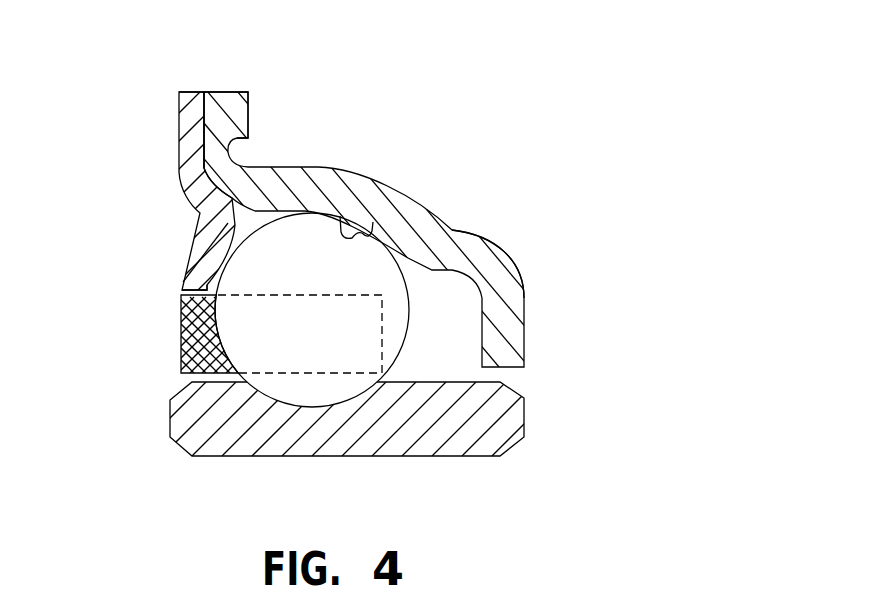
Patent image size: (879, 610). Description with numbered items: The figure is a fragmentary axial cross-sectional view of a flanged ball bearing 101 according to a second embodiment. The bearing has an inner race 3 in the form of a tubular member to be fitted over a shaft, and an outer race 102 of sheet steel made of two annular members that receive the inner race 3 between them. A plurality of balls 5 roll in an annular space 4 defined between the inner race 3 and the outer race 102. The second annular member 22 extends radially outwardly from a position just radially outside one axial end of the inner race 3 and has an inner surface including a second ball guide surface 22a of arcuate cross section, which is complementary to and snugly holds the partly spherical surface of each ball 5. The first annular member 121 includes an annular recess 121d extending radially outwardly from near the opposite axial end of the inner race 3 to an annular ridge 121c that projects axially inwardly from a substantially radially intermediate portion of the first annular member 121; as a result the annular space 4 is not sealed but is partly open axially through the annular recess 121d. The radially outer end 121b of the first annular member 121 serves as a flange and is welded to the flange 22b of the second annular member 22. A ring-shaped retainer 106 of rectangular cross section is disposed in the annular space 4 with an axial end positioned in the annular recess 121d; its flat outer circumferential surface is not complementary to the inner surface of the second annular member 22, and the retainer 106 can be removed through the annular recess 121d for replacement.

The flanged ball bearing 101 is at (369, 267).
The outer race 102 is at (357, 162).
The second annular member 22 is at (369, 205).
The second ball guide surface 22a is at (370, 233).
The flange 22b is at (232, 117).
The annular space 4 is at (463, 290).
The inner race 3 is at (512, 415).
The balls 5 is at (324, 390).
The first annular member 121 is at (213, 208).
The radially outer end 121b is at (178, 118).
The annular ridge 121c is at (228, 223).
The annular recess 121d is at (179, 293).
The ring-shaped retainer 106 is at (180, 334).